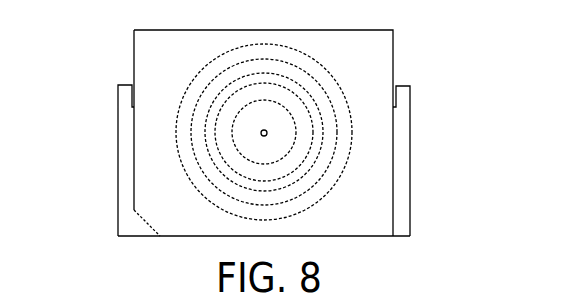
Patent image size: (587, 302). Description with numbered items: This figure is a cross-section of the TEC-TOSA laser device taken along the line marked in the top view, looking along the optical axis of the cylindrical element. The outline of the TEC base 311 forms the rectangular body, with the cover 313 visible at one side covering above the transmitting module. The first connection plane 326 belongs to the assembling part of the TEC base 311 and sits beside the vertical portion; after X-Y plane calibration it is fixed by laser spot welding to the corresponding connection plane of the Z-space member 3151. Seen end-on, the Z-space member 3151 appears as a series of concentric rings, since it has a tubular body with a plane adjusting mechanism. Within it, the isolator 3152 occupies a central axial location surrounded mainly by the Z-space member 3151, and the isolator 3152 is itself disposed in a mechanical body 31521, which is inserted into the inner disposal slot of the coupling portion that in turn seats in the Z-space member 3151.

The TEC base 311 is at (392, 35).
The cover 313 is at (397, 160).
The first connection plane 326 is at (149, 199).
The Z-space member 3151 is at (210, 93).
The isolator 3152 is at (232, 138).
The mechanical body 31521 is at (306, 117).